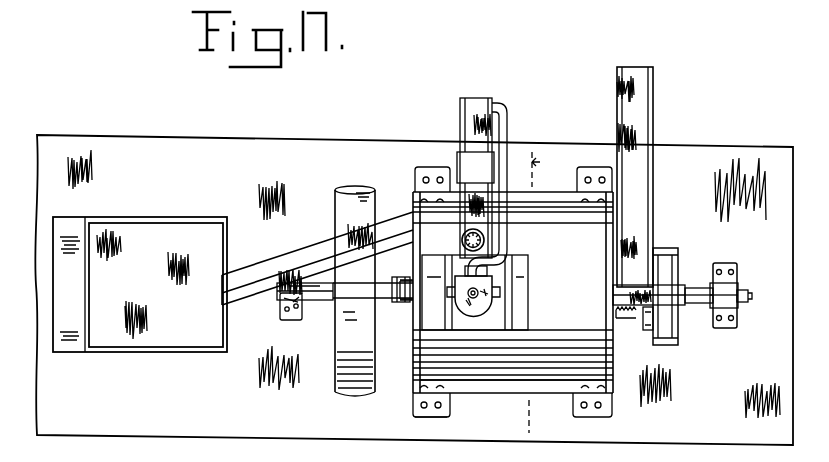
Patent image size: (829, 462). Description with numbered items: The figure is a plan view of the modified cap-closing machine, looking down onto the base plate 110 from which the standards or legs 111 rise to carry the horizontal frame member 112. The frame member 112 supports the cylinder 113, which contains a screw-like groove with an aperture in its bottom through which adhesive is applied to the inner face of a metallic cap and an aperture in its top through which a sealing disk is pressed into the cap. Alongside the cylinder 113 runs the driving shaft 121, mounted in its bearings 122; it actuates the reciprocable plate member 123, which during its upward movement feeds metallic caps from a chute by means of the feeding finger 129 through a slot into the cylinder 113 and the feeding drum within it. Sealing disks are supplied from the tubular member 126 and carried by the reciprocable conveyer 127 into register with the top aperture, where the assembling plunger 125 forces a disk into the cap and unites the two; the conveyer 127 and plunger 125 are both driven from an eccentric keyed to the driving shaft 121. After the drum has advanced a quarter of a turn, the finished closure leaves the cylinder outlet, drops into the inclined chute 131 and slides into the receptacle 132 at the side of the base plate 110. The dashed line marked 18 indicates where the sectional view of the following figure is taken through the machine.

The base plate 110 is at (124, 147).
The standards or legs 111 is at (450, 402).
The horizontal frame member 112 is at (508, 386).
The cylinder 113 is at (506, 292).
The driving shaft 121 is at (701, 290).
The bearings 122 is at (289, 299).
The reciprocable plate member 123 is at (651, 327).
The assembling plunger 125 is at (500, 292).
The tubular member 126 is at (487, 239).
The reciprocable conveyer 127 is at (465, 127).
The feeding finger 129 is at (643, 262).
The chute 131 is at (299, 258).
The receptacle 132 is at (155, 240).
The section line 18— 18 is at (542, 290).